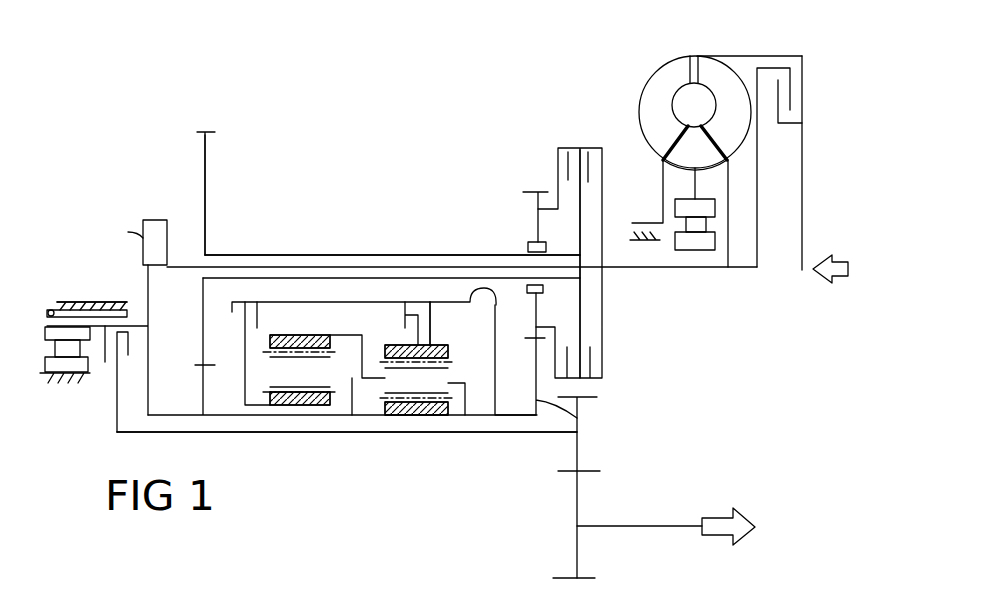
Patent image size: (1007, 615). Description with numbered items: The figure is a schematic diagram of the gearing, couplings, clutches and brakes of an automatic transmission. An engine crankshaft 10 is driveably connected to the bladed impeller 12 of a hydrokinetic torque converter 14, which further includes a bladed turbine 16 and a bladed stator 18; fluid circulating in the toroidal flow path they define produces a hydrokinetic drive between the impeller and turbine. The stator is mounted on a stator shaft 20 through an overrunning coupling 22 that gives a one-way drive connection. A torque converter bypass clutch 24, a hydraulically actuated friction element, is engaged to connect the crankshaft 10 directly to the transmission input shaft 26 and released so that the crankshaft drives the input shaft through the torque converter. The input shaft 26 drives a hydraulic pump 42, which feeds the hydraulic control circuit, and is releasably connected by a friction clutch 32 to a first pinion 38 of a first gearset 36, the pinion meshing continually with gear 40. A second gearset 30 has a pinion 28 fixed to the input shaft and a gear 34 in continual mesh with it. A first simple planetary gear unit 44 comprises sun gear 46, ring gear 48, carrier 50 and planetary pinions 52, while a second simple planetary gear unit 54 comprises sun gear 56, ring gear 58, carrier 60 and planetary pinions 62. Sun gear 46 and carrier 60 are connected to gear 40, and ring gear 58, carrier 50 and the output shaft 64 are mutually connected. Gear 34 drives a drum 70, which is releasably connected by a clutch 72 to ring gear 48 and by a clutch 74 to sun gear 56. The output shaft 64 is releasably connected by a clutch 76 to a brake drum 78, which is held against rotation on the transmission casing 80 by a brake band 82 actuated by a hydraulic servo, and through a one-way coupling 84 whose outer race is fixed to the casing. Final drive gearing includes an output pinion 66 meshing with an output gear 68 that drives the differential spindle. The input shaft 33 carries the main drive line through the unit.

The engine crankshaft 10 is at (813, 265).
The bladed impeller 12 is at (671, 121).
The hydrokinetic torque converter 14 is at (683, 33).
The bladed turbine 16 is at (742, 121).
The bladed stator 18 is at (707, 163).
The stator shaft 20 is at (628, 256).
The overrunning coupling 22 is at (695, 233).
The torque converter bypass clutch 24 is at (790, 82).
The transmission input shaft 26 is at (625, 270).
The pinion 28 is at (523, 192).
The second gearset 30 is at (540, 160).
The hydraulically actuated friction clutch 32 is at (580, 163).
The input shaft 33 is at (413, 255).
The gear 34 is at (577, 418).
The first gearset 36 is at (183, 190).
The first pinion 38 is at (207, 213).
The gear 40 is at (203, 385).
The hydraulic pump 42 is at (152, 220).
The first simple planetary gear unit 44 is at (393, 312).
The sun gear 46 is at (390, 417).
The ring gear 48 is at (435, 345).
The carrier 50 is at (465, 380).
The set of planetary pinions 52 is at (437, 377).
The second simple planetary gear unit 54 is at (323, 306).
The sun gear 56 is at (285, 407).
The ring gear 58 is at (320, 337).
The carrier 60 is at (342, 378).
The set of planetary pinions 62 is at (277, 370).
The output shaft 64 is at (480, 432).
The output pinion 66 is at (577, 457).
The output gear 68 is at (577, 556).
The drum 70 is at (536, 351).
The clutch 72 is at (430, 302).
The clutch 74 is at (238, 313).
The clutch 76 is at (133, 326).
The brake drum 78 is at (148, 326).
The transmission casing 80 is at (127, 275).
The brake band 82 is at (50, 310).
The coupling 84 is at (57, 345).